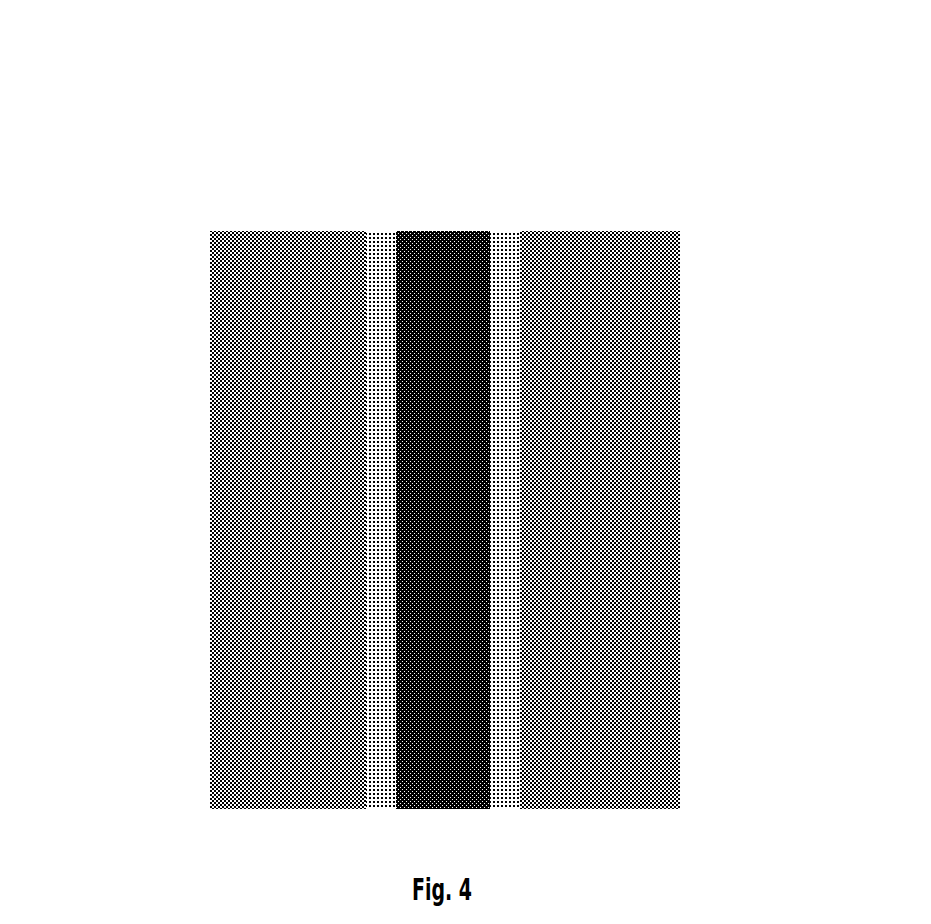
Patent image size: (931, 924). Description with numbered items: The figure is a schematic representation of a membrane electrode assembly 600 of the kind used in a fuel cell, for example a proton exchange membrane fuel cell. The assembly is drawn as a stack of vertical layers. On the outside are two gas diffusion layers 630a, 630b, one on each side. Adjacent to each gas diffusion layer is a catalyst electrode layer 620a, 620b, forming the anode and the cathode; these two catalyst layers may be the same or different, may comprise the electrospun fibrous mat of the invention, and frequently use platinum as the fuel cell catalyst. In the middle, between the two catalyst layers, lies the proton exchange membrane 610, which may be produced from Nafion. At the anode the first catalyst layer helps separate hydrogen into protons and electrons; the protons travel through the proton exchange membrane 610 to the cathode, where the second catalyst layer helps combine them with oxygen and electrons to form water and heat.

The membrane electrode assembly 600 is at (444, 405).
The proton exchange membrane 610 is at (440, 284).
The catalyst electrode layer 620a is at (379, 257).
The catalyst electrode layer 620b is at (508, 257).
The gas diffusion layer 630a is at (222, 409).
The gas diffusion layer 630b is at (666, 409).